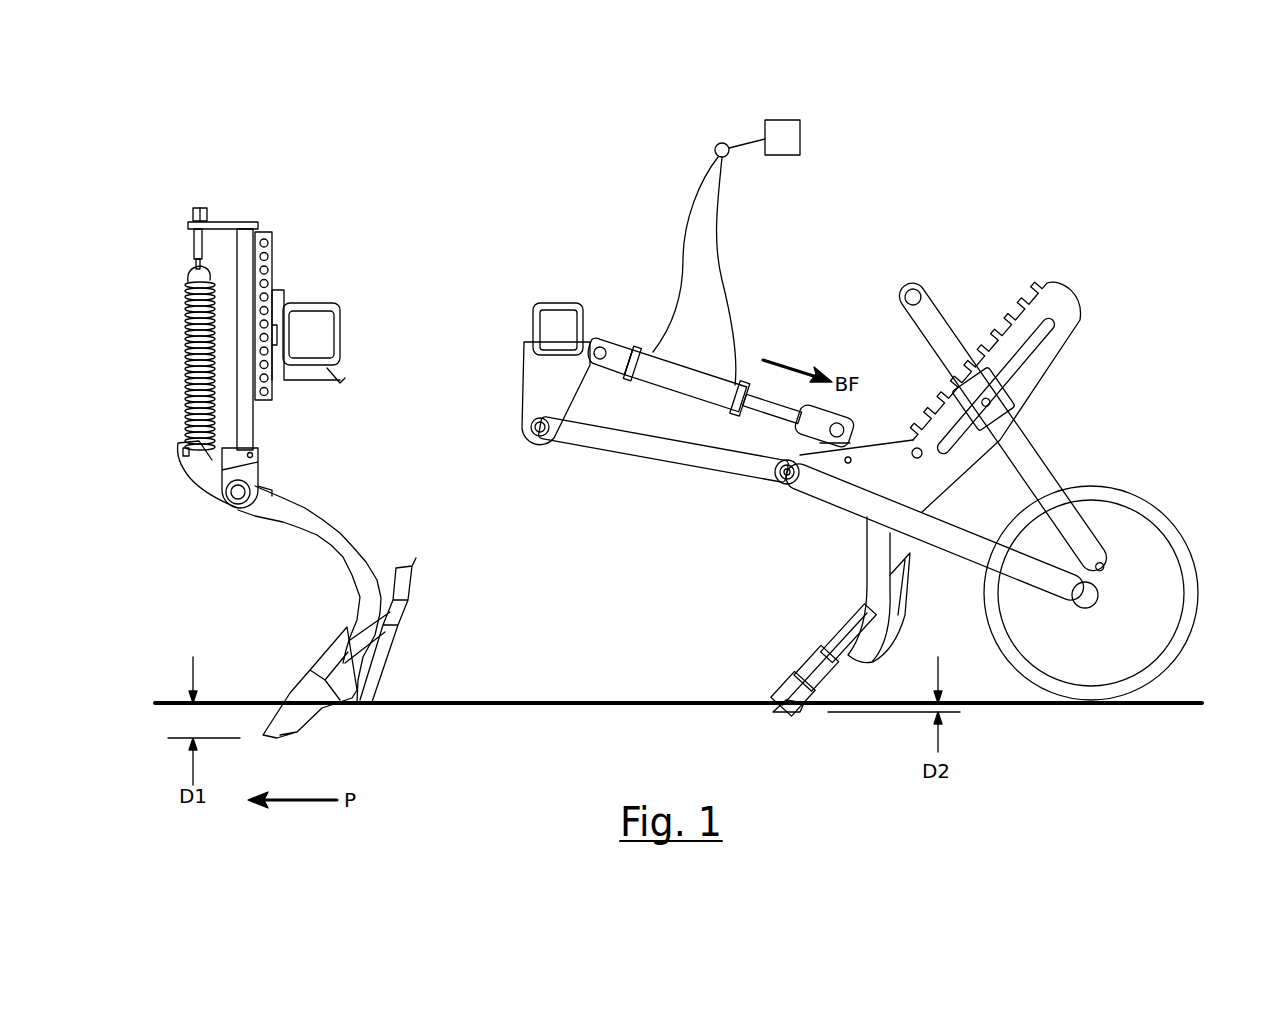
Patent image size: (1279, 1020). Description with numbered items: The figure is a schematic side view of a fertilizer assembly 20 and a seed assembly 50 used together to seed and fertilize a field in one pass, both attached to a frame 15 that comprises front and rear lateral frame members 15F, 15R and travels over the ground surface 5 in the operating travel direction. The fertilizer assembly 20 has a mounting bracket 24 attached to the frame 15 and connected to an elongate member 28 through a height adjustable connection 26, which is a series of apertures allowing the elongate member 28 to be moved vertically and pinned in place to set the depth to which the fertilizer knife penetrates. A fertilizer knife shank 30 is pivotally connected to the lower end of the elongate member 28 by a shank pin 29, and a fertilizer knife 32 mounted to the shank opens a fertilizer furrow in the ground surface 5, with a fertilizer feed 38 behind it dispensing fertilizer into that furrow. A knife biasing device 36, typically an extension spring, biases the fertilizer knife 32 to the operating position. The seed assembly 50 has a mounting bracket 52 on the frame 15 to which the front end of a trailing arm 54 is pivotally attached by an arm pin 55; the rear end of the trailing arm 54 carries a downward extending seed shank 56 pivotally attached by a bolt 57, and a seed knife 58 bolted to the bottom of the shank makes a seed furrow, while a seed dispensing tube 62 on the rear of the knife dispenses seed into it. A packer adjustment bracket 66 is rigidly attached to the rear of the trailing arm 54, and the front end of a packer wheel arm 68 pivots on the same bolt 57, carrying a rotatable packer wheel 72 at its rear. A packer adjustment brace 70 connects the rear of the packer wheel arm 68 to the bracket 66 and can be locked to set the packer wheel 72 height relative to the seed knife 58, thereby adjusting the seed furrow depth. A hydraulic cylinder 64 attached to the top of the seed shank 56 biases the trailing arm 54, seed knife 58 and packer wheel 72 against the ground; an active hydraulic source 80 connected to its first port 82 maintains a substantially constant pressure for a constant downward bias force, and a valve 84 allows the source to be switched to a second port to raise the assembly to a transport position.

The ground surface 5 is at (570, 705).
The frame 15 is at (543, 302).
The front lateral frame member 15F is at (322, 305).
The rear lateral frame member 15R is at (567, 302).
The fertilizer assembly 20 is at (280, 185).
The mounting bracket 24 is at (295, 383).
The height adjustable connection 26 is at (275, 290).
The elongate member 28 is at (238, 240).
The shank pin 29 is at (248, 478).
The fertilizer knife shank 30 is at (330, 540).
The fertilizer knife 32 is at (287, 692).
The knife biasing device 36 is at (185, 352).
The fertilizer feed 38 is at (415, 608).
The seed assembly 50 is at (810, 283).
The mounting bracket 52 is at (524, 400).
The trailing arm 54 is at (665, 460).
The arm pin 55 is at (530, 437).
The seed shank 56 is at (865, 578).
The bolt 57 is at (780, 480).
The seed knife 58 is at (812, 655).
The seed dispensing tube 62 is at (907, 595).
The hydraulic cylinder 64 is at (660, 392).
The packer adjustment bracket 66 is at (1073, 295).
The packer wheel arm 68 is at (965, 523).
The packer adjustment brace 70 is at (1038, 447).
The packer wheel 72 is at (1150, 495).
The active hydraulic source 80 is at (783, 120).
The first port 82 is at (655, 350).
The valve 84 is at (715, 150).